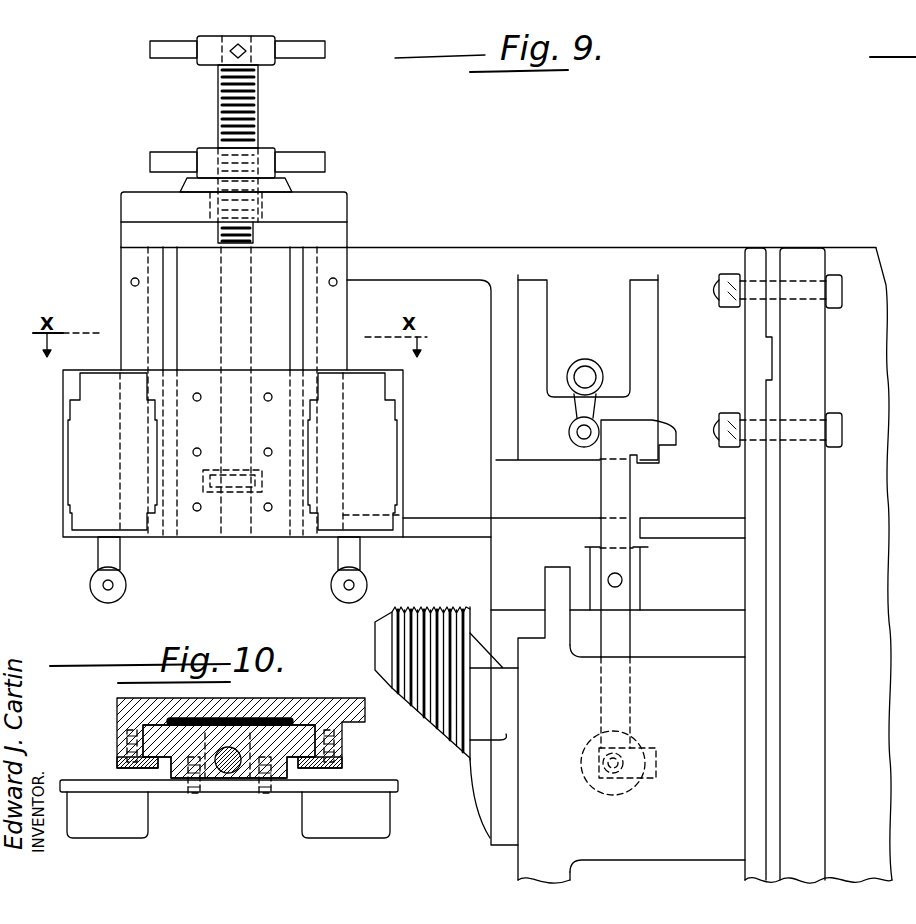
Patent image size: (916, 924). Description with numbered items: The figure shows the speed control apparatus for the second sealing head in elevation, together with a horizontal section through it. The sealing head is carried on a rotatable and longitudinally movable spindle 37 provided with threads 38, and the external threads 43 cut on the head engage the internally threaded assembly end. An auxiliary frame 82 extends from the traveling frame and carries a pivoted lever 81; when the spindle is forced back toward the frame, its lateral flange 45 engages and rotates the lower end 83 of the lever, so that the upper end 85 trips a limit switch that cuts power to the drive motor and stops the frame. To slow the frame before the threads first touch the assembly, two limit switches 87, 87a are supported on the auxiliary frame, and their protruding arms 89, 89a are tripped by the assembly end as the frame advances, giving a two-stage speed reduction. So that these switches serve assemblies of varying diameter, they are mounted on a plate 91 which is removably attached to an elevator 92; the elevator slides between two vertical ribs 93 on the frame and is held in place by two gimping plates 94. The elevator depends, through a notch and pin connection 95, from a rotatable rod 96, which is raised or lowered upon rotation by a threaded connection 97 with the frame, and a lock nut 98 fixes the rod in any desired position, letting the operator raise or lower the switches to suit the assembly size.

In FIG. 9, the spindle 37 is at (692, 668).
In FIG. 9, the threads 38 is at (402, 610).
In FIG. 9, the external threads 43 is at (455, 610).
In FIG. 9, the lateral flange 45 is at (555, 815).
In FIG. 9, the lever 81 is at (573, 300).
In FIG. 9, the auxiliary frame 82 is at (506, 305).
In FIG. 10, the auxiliary frame 82 is at (135, 708).
In FIG. 9, the lower end of lever 83 is at (630, 785).
In FIG. 9, the upper end of lever 85 is at (620, 430).
In FIG. 9, the limit switch 87 is at (78, 478).
In FIG. 10, the limit switch 87 is at (90, 830).
In FIG. 9, the limit switch 87a is at (365, 480).
In FIG. 10, the limit switch 87a is at (375, 830).
In FIG. 9, the protruding arm 89 is at (100, 556).
In FIG. 9, the protruding arm 89a is at (350, 551).
In FIG. 9, the plate 91 is at (63, 378).
In FIG. 10, the plate 91 is at (398, 786).
In FIG. 9, the elevator 92 is at (190, 300).
In FIG. 10, the elevator 92 is at (172, 744).
In FIG. 10, the vertical ribs 93 is at (122, 745).
In FIG. 9, the gimping plates 94 is at (128, 303).
In FIG. 10, the gimping plates 94 is at (117, 762).
In FIG. 9, the notch and pin connection 95 is at (240, 497).
In FIG. 10, the notch and pin connection 95 is at (210, 793).
In FIG. 9, the rotatable rod 96 is at (220, 97).
In FIG. 10, the rotatable rod 96 is at (228, 772).
In FIG. 9, the threaded connection 97 is at (197, 203).
In FIG. 9, the lock nut 98 is at (200, 150).